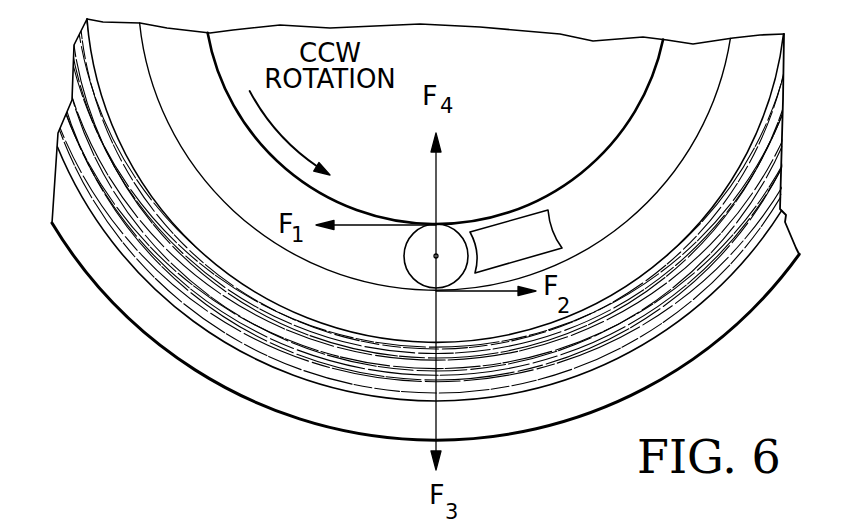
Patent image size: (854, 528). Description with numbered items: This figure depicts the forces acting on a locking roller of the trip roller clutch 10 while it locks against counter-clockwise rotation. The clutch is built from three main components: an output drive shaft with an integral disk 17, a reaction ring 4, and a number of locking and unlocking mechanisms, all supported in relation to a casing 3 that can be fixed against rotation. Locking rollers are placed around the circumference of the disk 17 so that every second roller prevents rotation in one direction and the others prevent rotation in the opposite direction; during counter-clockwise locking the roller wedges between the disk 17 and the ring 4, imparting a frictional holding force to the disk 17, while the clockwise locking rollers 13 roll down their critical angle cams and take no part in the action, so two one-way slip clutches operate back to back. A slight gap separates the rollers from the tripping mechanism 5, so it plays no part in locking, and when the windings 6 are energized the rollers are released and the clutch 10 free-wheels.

The casing 3 is at (760, 303).
The reaction ring 4 is at (702, 202).
The tripping mechanism 5 is at (523, 255).
The windings 6 is at (216, 318).
The trip roller clutch 10 is at (110, 322).
The clockwise locking roller 13 is at (448, 239).
The disk 17 is at (562, 104).